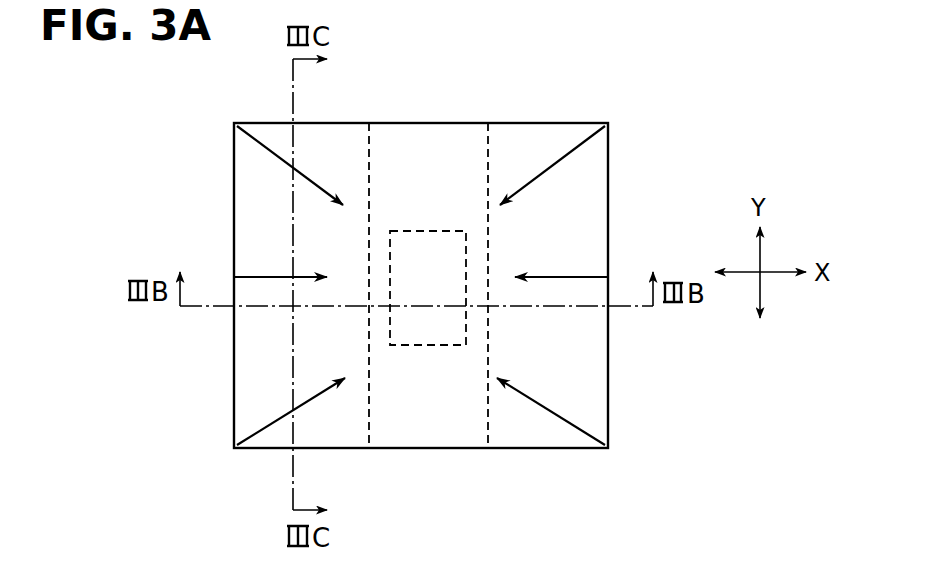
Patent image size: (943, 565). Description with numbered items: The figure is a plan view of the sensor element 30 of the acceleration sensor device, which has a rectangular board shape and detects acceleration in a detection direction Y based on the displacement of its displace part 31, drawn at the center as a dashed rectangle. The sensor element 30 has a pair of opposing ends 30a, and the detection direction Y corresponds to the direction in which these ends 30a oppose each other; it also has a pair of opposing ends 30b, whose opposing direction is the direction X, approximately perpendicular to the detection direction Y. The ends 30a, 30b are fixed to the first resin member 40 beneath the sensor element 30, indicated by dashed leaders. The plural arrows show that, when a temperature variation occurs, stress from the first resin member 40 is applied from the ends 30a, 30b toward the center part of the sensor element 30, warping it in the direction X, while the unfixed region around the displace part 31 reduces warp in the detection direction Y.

The sensor element 30 is at (585, 192).
The ends 30a is at (388, 122).
The ends 30b is at (234, 233).
The displace part 31 is at (437, 231).
The first resin member 40 is at (369, 405).